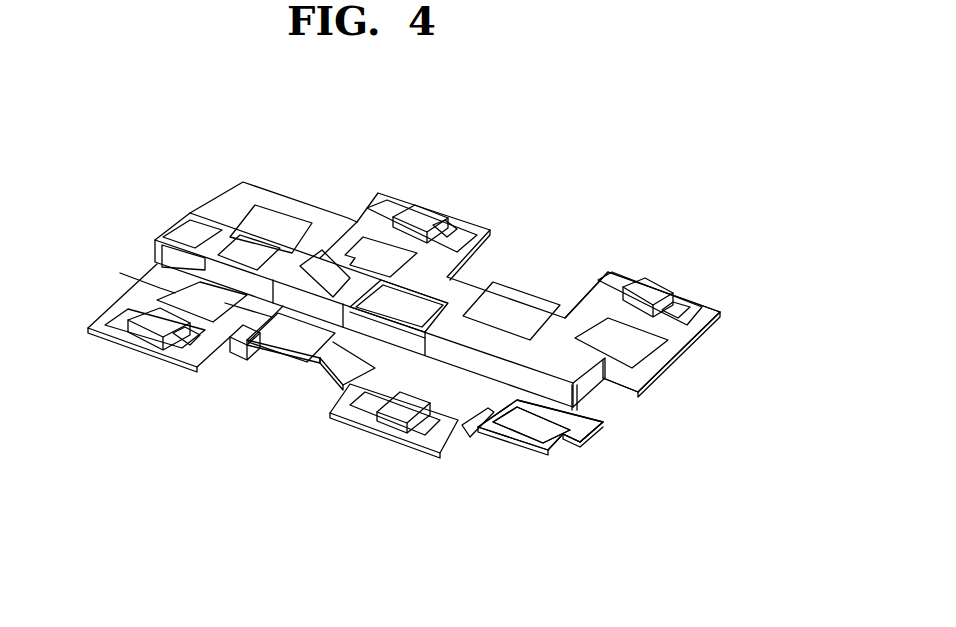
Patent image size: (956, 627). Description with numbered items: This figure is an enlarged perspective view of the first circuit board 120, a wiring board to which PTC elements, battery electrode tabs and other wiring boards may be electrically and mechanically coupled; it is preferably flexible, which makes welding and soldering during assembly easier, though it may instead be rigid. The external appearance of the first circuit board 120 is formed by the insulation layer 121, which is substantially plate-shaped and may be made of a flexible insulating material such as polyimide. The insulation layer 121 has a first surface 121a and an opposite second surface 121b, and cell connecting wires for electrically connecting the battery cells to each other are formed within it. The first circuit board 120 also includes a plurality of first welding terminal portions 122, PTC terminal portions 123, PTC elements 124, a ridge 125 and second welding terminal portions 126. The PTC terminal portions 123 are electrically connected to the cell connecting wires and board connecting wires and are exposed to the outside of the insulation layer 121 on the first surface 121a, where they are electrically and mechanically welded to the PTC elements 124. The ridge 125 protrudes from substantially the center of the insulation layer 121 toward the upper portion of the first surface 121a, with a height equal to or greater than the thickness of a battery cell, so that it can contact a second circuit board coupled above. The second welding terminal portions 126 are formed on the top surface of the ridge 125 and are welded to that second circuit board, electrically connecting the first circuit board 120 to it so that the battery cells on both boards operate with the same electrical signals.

The first circuit board 120 is at (178, 130).
The insulation layer 121 is at (660, 523).
The first surface 121a is at (595, 428).
The second surface 121b is at (557, 452).
The first welding terminal portions 122 is at (175, 293).
The PTC terminal portions 123 is at (690, 315).
The PTC elements 124 is at (155, 327).
The ridge 125 is at (610, 378).
The second welding terminal portions 126 is at (492, 327).